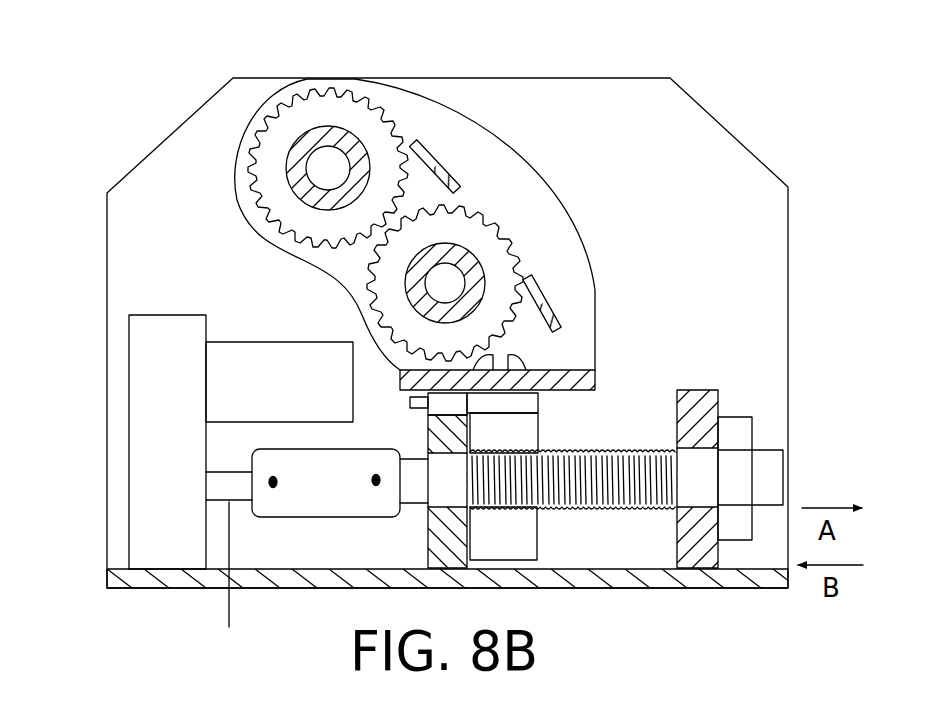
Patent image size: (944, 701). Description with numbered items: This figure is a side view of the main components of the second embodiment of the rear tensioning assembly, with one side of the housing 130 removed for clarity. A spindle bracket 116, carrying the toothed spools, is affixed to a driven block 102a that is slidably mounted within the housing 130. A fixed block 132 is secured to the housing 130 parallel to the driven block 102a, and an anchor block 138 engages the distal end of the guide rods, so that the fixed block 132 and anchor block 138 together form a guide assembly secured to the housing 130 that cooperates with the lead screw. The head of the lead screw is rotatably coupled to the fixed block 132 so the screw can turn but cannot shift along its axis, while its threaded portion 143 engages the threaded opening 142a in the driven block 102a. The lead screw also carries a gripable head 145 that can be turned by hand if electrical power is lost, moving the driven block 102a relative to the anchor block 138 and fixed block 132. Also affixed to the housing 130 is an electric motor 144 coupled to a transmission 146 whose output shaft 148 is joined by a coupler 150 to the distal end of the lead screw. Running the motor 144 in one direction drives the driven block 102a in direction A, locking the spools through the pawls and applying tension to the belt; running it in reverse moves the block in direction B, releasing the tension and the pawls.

The driven block 102a is at (537, 548).
The spindle bracket 116 is at (468, 122).
The housing 130 is at (722, 170).
The fixed block 132 is at (718, 390).
The anchor block 138 is at (428, 548).
The threaded opening 142a is at (540, 507).
The threaded portion 143 is at (600, 450).
The electric motor 144 is at (297, 401).
The gripable head 145 is at (770, 462).
The transmission 146 is at (147, 493).
The output shaft 148 is at (237, 584).
The coupler 150 is at (310, 507).